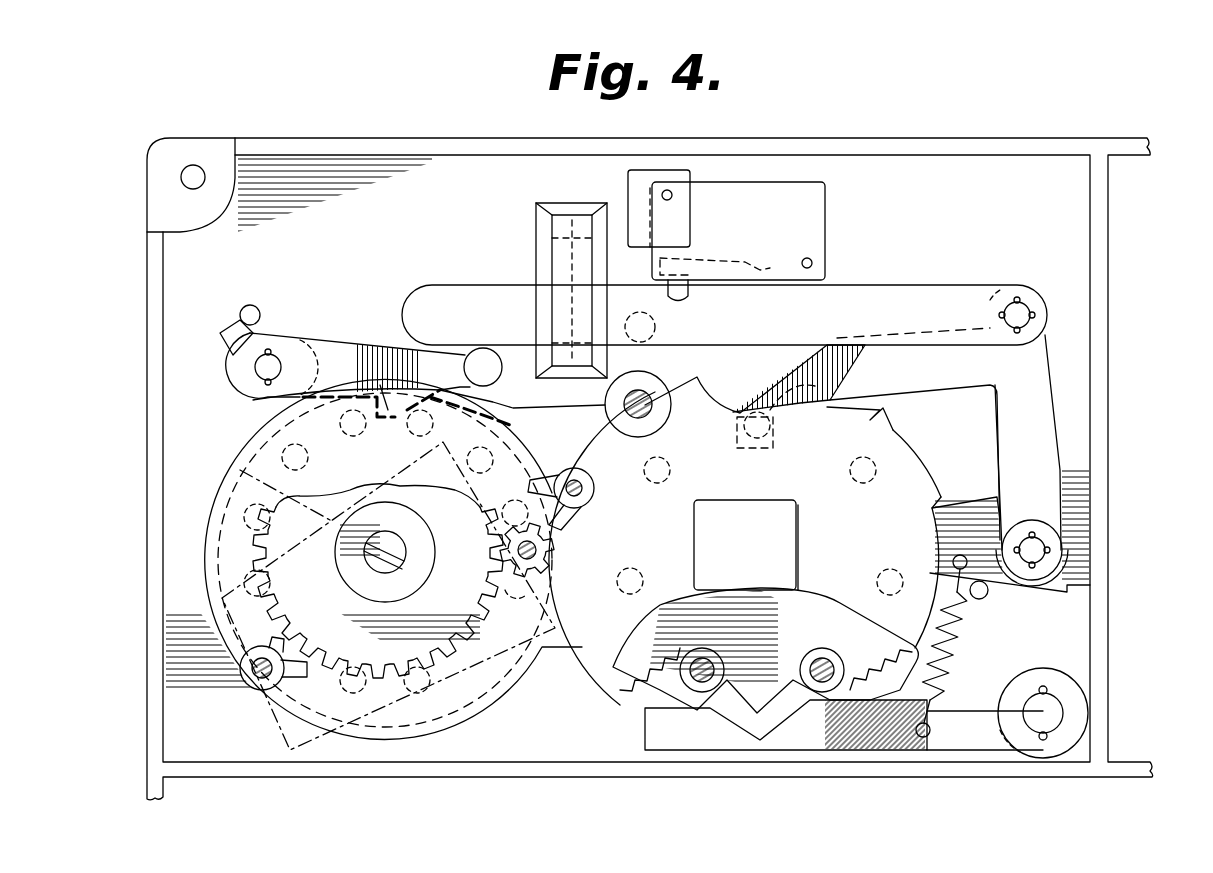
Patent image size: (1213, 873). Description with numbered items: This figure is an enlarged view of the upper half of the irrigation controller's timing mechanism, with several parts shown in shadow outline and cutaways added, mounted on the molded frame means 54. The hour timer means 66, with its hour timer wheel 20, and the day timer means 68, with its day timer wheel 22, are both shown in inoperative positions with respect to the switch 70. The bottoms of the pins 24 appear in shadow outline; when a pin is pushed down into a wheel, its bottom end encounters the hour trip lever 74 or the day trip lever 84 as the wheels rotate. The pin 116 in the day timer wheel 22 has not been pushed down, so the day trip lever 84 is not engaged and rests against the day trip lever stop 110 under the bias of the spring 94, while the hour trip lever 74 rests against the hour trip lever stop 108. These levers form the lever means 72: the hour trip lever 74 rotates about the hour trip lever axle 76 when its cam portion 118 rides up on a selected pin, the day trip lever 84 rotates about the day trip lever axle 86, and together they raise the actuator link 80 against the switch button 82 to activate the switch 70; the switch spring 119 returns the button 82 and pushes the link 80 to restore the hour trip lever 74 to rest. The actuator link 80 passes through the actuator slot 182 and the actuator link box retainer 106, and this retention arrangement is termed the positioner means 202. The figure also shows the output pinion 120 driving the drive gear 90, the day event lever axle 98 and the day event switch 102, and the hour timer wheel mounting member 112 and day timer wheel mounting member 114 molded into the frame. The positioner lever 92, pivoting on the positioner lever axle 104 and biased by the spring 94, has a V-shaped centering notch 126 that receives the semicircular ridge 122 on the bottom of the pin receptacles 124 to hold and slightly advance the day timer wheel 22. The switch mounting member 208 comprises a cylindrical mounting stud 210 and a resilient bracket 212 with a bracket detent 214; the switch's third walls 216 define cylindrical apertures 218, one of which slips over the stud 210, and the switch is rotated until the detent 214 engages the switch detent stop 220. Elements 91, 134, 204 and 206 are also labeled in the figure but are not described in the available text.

The hour timer wheel 20 is at (232, 472).
The day timer wheel 22 is at (667, 640).
The pins 24 is at (355, 432).
The frame means 54 is at (262, 138).
The hour timer means 66 is at (195, 520).
The day timer means 68 is at (1068, 340).
The switch 70 is at (800, 190).
The lever means 72 is at (995, 132).
The hour trip lever 74 is at (343, 352).
The hour trip lever axle 76 is at (257, 367).
The actuator link 80 is at (966, 298).
The switch button 82 is at (678, 300).
The day trip lever 84 is at (1040, 402).
The day trip lever axle 86 is at (1035, 550).
The drive gear 90 is at (345, 637).
The pawl 91 is at (583, 490).
The positioner lever 92 is at (944, 742).
The biasing spring 94 is at (960, 655).
The day event lever axle 98 is at (648, 413).
The day event switch 102 is at (790, 545).
The positioner lever axle 104 is at (1048, 713).
The actuator link box retainer 106 is at (552, 253).
The hour trip lever stop 108 is at (245, 308).
The day trip lever stop 110 is at (988, 590).
The hour timer wheel mounting member 112 is at (210, 578).
The day timer wheel mounting member 114 is at (893, 425).
The pin 116 is at (757, 432).
The hour trip lever cam portion 118 is at (485, 427).
The switch spring 119 is at (745, 272).
The output pinion 120 is at (500, 553).
The semicircular ridge 122 is at (765, 667).
The pin receptacles 124 is at (705, 648).
The V-shaped centering notch 126 is at (818, 702).
The hole 134 is at (640, 342).
The actuator slot 182 is at (562, 238).
The positioner means 202 is at (512, 215).
The line 204 is at (383, 387).
The roller 206 is at (487, 347).
The switch mounting member 208 is at (702, 178).
The cylindrical mounting stud 210 is at (812, 263).
The resilient bracket 212 is at (632, 200).
The bracket detent 214 is at (664, 193).
The third walls 216 is at (810, 262).
The cylindrical apertures 218 is at (669, 190).
The switch detent stop 220 is at (667, 197).